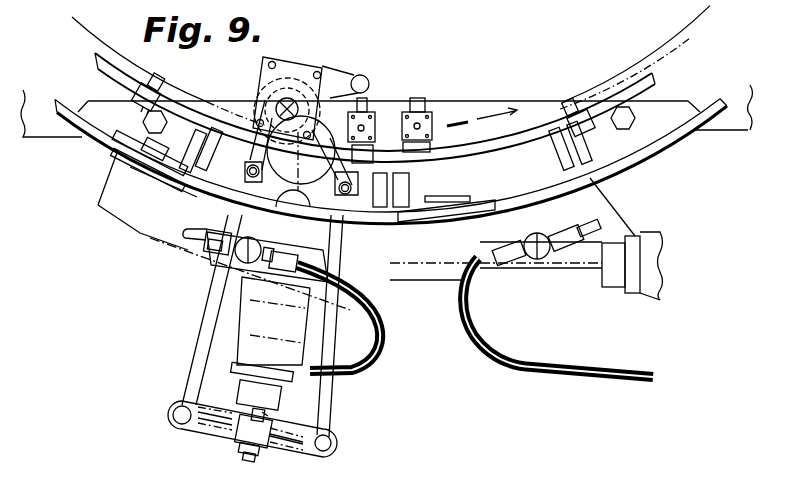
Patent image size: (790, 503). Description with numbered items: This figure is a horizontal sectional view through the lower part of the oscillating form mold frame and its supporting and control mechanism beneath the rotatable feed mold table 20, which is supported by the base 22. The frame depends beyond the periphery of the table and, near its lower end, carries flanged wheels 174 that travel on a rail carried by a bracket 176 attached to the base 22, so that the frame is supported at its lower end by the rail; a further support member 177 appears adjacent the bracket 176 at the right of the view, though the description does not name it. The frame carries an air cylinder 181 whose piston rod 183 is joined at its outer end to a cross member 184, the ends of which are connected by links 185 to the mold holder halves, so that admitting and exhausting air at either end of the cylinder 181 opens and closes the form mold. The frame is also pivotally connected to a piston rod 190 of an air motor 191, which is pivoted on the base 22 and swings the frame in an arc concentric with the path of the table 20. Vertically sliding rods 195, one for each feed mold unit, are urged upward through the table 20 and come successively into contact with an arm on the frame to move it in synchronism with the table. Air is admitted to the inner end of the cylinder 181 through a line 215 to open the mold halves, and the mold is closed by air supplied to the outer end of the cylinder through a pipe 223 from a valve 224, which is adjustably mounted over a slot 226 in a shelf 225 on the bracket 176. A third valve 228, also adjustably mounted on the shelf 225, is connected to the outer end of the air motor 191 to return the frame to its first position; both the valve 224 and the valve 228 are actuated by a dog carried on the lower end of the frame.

The feed mold table 20 is at (645, 76).
The base 22 is at (47, 133).
The flanged wheels 174 is at (118, 160).
The bracket 176 is at (675, 117).
The track support 177 is at (733, 100).
The air cylinder 181 is at (247, 333).
The piston rod 183 is at (270, 417).
The cross member 184 is at (220, 427).
The links 185 is at (187, 385).
The piston rod 190 is at (583, 262).
The air motor 191 is at (647, 243).
The vertically sliding rods 195 is at (292, 100).
The line 215 is at (562, 372).
The pipe 223 is at (387, 362).
The valve 224 is at (240, 275).
The shelf 225 is at (205, 240).
The slot 226 is at (258, 262).
The third valve 228 is at (518, 262).